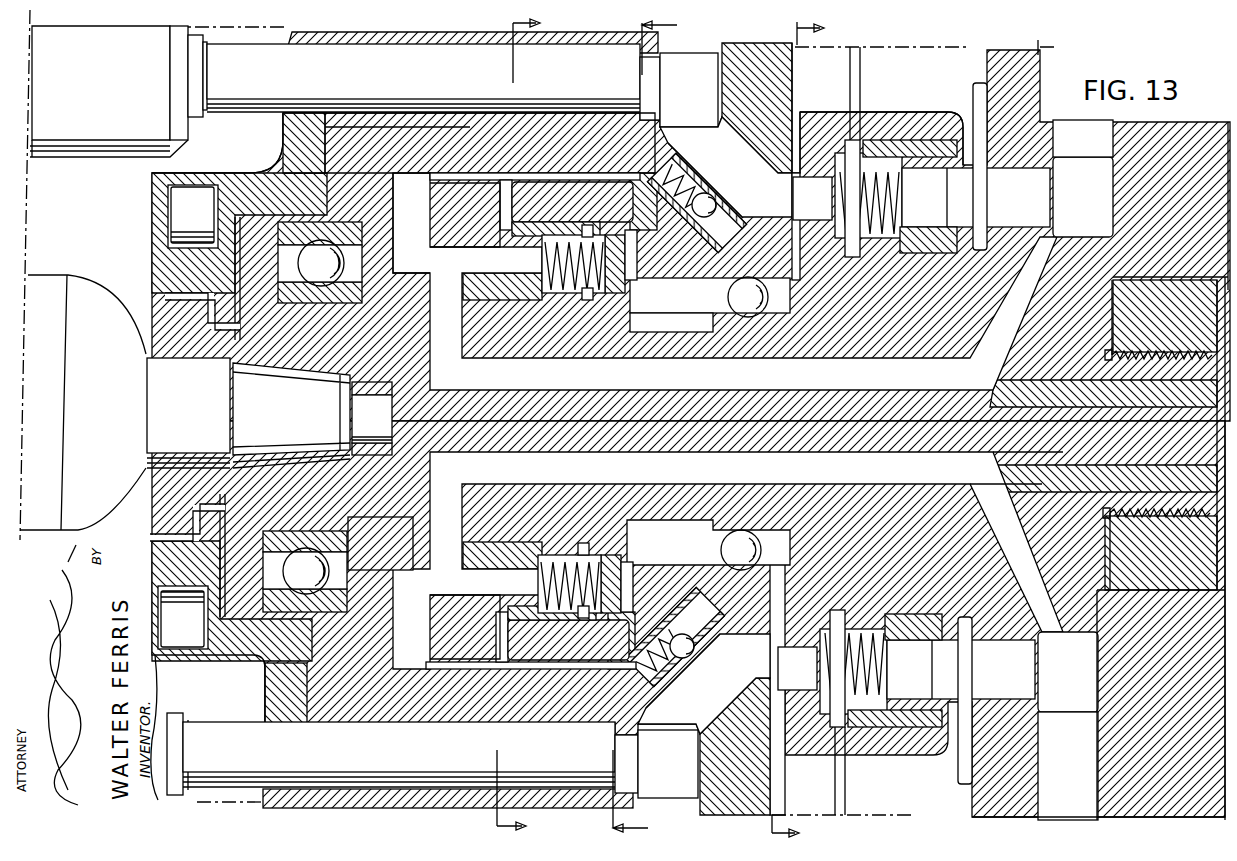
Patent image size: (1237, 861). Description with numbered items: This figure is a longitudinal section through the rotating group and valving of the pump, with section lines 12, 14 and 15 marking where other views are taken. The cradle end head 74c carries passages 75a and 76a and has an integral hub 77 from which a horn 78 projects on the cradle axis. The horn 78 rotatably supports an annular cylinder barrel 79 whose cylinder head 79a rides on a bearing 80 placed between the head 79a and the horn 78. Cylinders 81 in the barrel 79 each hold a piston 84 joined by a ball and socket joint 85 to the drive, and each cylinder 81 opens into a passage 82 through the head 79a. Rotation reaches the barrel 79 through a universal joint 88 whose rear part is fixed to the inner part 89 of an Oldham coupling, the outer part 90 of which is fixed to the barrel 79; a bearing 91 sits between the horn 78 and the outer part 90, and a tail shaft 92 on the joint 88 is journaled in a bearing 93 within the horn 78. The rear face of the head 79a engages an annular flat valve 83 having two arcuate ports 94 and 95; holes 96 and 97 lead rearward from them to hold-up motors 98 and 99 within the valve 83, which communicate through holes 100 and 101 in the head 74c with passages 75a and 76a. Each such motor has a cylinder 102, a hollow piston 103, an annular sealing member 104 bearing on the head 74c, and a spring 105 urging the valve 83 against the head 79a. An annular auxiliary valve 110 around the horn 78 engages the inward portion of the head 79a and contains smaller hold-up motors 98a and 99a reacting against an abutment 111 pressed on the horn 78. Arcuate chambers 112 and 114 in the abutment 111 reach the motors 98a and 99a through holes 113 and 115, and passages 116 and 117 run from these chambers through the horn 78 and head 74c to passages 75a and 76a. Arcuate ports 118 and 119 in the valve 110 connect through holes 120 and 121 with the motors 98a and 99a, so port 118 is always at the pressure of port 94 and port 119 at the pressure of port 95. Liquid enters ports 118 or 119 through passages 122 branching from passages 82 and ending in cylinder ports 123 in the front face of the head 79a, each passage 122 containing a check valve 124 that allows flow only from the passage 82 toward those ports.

The section line 12- 12 is at (531, 426).
The section line 14- 14 is at (809, 433).
The section line 15- 15 is at (658, 429).
The end head 74c is at (1157, 724).
The passage 75a is at (1086, 144).
The passage 76a is at (1071, 789).
The hub 77 is at (877, 555).
The horn 78 is at (1110, 444).
The cylinder barrel 79 is at (305, 30).
The cylinder head 79a is at (793, 63).
The bearing 80 is at (757, 298).
The cylinder 81 is at (645, 88).
The passage 82 is at (685, 126).
The flat valve 83 is at (832, 118).
The piston 84 is at (350, 72).
The ball and socket joint 85 is at (108, 68).
The universal joint 88 is at (61, 312).
The inner part of Oldham coupling 89 is at (200, 352).
The outer part of Oldham coupling 90 is at (250, 192).
The bearing 91 is at (331, 263).
The tail shaft 92 is at (290, 407).
The bearing 93 is at (380, 440).
The arcuate port 94 is at (795, 200).
The arcuate port 95 is at (778, 672).
The hole 96 is at (824, 210).
The hole 97 is at (809, 676).
The hold-up motor 98 is at (900, 135).
The hold-up motor 98a is at (568, 232).
The hold-up motor 99 is at (900, 740).
The hold-up motor 99a is at (538, 620).
The hole 100 is at (1045, 195).
The hole 101 is at (1020, 690).
The cylinder 102 is at (852, 140).
The hollow piston 103 is at (930, 240).
The sealing member 104 is at (972, 180).
The spring 105 is at (878, 200).
The auxiliary valve 110 is at (592, 190).
The abutment 111 is at (424, 190).
The arcuate chamber 112 is at (430, 286).
The hole 113 is at (468, 255).
The arcuate chamber 114 is at (386, 549).
The hole 115 is at (460, 598).
The passage 116 is at (700, 386).
The passage 117 is at (747, 485).
The arcuate port 118 is at (620, 258).
The arcuate port 119 is at (632, 585).
The hole 120 is at (633, 282).
The hole 121 is at (634, 565).
The passage 122 is at (712, 190).
The cylinder port 123 is at (682, 272).
The check valve 124 is at (712, 200).